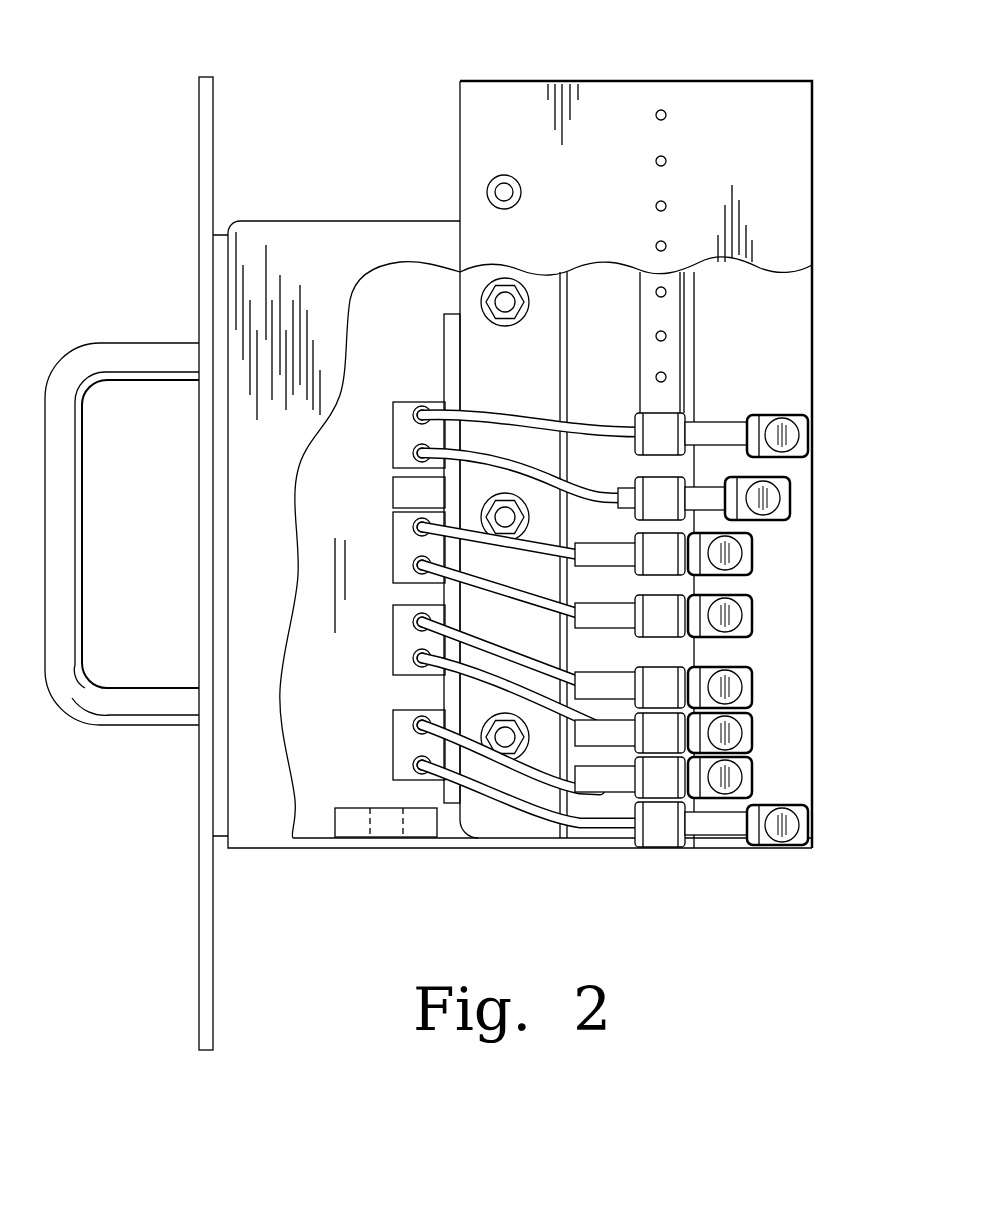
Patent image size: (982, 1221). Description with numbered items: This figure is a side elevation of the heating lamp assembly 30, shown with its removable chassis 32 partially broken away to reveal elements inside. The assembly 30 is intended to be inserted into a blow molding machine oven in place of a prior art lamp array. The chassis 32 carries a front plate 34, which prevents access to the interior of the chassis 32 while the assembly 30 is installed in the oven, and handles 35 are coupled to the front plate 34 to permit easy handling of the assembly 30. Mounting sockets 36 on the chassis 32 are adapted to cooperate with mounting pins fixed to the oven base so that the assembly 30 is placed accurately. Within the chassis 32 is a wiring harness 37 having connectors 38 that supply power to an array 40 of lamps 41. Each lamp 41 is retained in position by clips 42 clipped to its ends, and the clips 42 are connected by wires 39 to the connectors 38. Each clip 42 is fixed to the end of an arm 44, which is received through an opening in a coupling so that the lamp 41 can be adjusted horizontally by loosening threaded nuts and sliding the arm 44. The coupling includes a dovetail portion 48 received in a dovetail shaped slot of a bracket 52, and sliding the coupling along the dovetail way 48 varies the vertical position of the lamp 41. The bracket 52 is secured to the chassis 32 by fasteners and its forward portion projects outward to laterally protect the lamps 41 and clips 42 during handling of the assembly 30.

The heating lamp assembly 30 is at (386, 94).
The chassis 32 is at (338, 245).
The front plate 34 is at (214, 185).
The handles 35 is at (135, 358).
The mounting sockets 36 is at (345, 808).
The wiring harness 37 is at (450, 350).
The connectors 38 is at (400, 428).
The wires 39 is at (525, 413).
The array of lamps 40 is at (852, 461).
The lamps 41 is at (740, 553).
The clips 42 is at (770, 415).
The arm 44 is at (720, 432).
The dovetail portion 48 is at (665, 357).
The bracket 52 is at (750, 118).